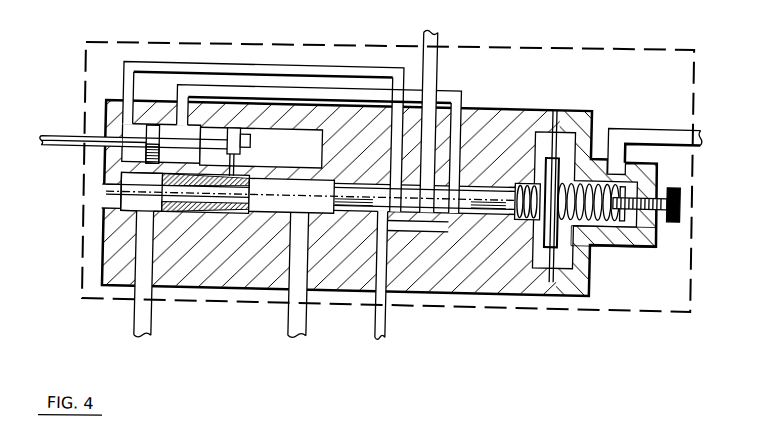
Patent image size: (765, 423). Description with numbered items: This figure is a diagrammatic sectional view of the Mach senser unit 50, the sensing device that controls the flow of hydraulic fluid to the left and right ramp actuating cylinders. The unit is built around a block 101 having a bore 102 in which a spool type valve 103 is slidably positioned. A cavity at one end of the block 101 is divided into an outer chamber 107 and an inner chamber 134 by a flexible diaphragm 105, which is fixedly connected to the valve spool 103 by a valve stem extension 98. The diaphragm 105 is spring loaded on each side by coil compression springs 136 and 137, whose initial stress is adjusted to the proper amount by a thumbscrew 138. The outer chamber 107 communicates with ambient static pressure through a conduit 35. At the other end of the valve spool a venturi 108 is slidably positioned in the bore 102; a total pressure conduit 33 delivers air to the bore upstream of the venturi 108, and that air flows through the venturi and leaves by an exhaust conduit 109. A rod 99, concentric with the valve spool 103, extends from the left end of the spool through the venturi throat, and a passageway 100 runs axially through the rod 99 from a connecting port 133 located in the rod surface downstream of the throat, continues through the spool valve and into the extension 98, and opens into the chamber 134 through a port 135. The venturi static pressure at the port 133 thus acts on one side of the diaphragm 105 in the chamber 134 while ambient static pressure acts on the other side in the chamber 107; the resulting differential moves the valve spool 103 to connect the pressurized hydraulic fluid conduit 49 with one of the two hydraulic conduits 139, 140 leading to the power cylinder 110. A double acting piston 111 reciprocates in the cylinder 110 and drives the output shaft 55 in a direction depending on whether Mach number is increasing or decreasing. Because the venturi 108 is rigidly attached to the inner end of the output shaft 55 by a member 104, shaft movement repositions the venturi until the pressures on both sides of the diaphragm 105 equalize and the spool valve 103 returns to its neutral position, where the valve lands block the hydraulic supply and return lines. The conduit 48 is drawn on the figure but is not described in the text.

The Mach senser unit 50 is at (549, 28).
The hydraulic conduit 139 is at (250, 62).
The hydraulic conduit 140 is at (175, 101).
The pressurized hydraulic fluid conduit 49 is at (423, 70).
The double acting piston 111 is at (119, 134).
The output shaft 55 is at (69, 138).
The power cylinder 110 is at (143, 158).
The member 104 is at (246, 169).
The passageway 100 is at (315, 172).
The flexible diaphragm 105 is at (538, 120).
The valve stem extension 98 is at (521, 173).
The conduit 35 is at (632, 123).
The thumbscrew 138 is at (680, 185).
The coil compression spring 137 is at (594, 214).
The outer chamber 107 is at (572, 252).
The chamber 134 is at (548, 262).
The coil compression spring 136 is at (539, 220).
The port 135 is at (526, 210).
The bore 102 is at (421, 212).
The spool type valve 103 is at (304, 220).
The connecting port 133 is at (208, 206).
The venturi 108 is at (174, 209).
The rod 99 is at (136, 209).
The block 101 is at (107, 242).
The total pressure conduit 33 is at (135, 309).
The exhaust conduit 109 is at (298, 304).
The port 48 is at (389, 315).